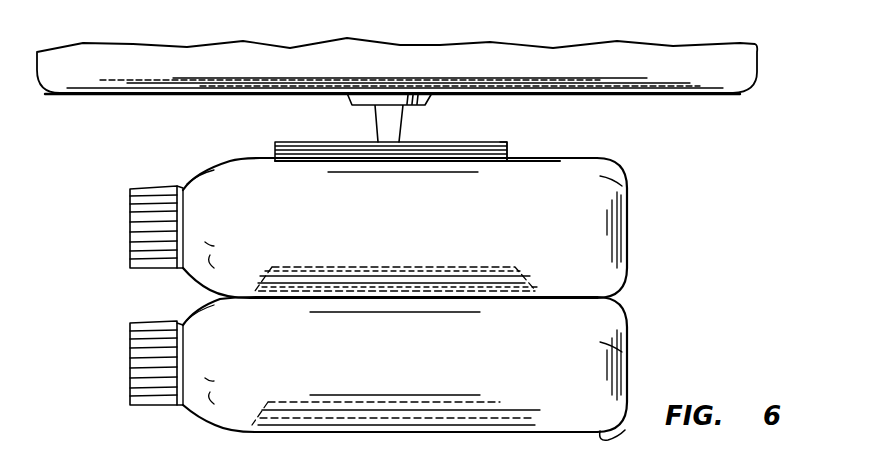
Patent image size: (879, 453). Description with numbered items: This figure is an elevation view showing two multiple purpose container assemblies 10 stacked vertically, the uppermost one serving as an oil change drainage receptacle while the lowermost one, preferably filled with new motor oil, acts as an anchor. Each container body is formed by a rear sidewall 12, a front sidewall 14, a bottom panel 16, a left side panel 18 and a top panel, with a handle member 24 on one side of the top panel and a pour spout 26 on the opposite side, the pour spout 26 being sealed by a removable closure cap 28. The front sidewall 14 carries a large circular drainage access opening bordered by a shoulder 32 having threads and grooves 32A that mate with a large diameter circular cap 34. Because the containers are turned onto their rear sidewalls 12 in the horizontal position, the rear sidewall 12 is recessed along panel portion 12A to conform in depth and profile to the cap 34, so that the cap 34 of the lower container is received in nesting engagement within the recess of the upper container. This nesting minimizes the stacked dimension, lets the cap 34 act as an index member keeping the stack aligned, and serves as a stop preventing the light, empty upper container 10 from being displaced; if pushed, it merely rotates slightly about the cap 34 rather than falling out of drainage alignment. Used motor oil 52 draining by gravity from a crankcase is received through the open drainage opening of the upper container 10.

The multiple purpose container/receptacle assembly 10 is at (645, 195).
The rear sidewall 12 is at (620, 432).
The recessed panel portion 12A is at (395, 264).
The front sidewall 14 is at (245, 158).
The bottom panel 16 is at (628, 230).
The left side panel 18 is at (608, 175).
The handle member 24 is at (162, 170).
The pour spout 26 is at (185, 215).
The removable closure cap 28 is at (128, 217).
The shoulder 32 is at (283, 142).
The threads and grooves 32A is at (508, 148).
The large diameter circular cap 34 is at (436, 268).
The used motor oil 52 is at (398, 118).